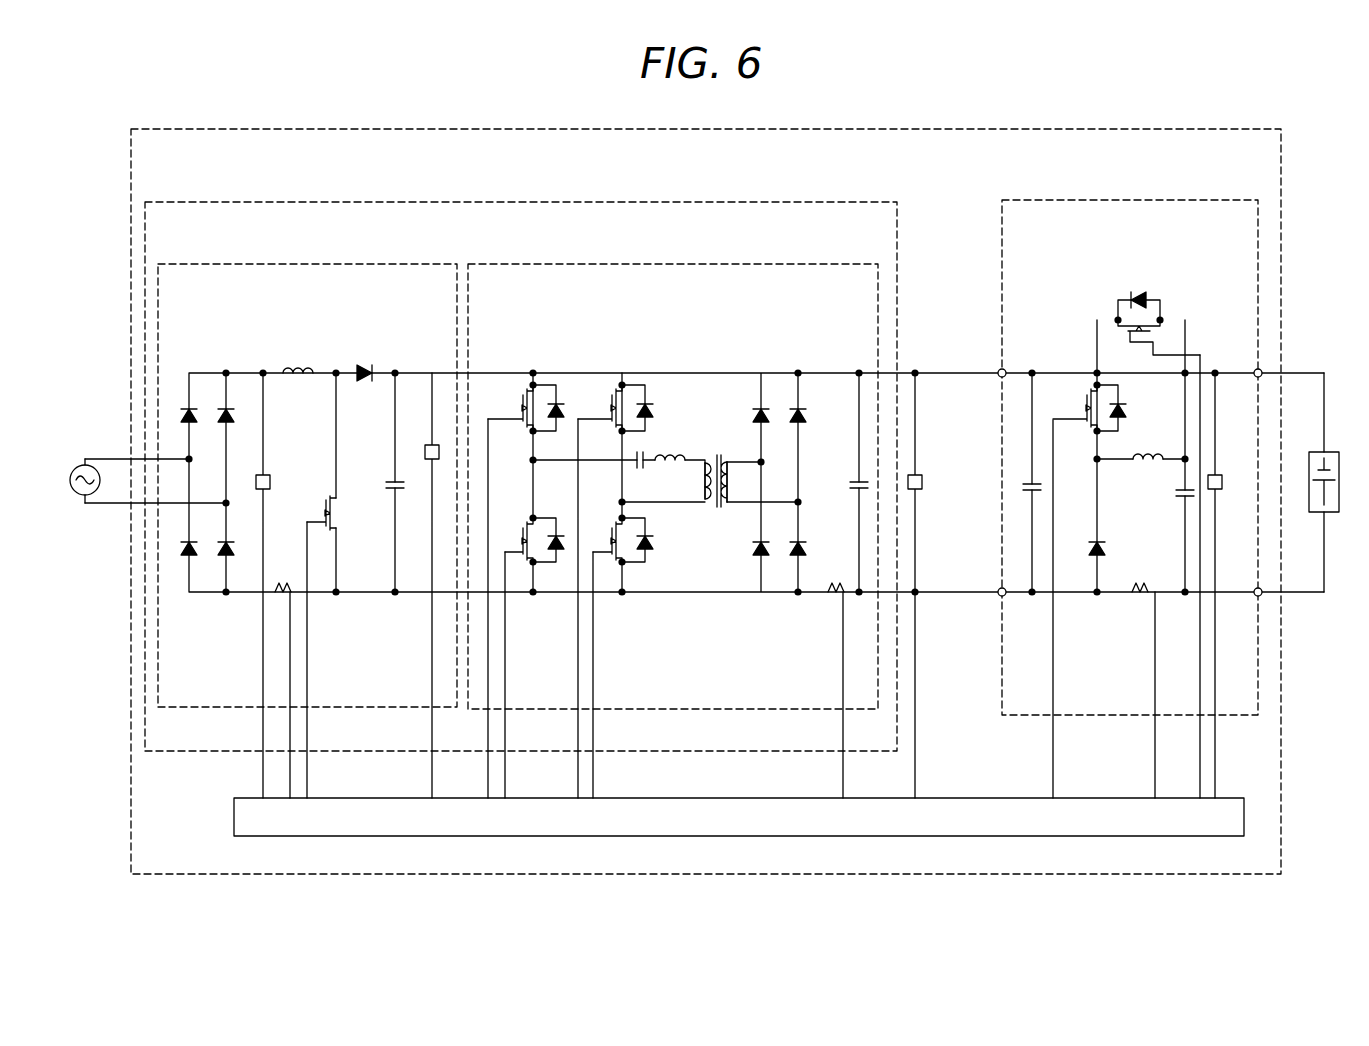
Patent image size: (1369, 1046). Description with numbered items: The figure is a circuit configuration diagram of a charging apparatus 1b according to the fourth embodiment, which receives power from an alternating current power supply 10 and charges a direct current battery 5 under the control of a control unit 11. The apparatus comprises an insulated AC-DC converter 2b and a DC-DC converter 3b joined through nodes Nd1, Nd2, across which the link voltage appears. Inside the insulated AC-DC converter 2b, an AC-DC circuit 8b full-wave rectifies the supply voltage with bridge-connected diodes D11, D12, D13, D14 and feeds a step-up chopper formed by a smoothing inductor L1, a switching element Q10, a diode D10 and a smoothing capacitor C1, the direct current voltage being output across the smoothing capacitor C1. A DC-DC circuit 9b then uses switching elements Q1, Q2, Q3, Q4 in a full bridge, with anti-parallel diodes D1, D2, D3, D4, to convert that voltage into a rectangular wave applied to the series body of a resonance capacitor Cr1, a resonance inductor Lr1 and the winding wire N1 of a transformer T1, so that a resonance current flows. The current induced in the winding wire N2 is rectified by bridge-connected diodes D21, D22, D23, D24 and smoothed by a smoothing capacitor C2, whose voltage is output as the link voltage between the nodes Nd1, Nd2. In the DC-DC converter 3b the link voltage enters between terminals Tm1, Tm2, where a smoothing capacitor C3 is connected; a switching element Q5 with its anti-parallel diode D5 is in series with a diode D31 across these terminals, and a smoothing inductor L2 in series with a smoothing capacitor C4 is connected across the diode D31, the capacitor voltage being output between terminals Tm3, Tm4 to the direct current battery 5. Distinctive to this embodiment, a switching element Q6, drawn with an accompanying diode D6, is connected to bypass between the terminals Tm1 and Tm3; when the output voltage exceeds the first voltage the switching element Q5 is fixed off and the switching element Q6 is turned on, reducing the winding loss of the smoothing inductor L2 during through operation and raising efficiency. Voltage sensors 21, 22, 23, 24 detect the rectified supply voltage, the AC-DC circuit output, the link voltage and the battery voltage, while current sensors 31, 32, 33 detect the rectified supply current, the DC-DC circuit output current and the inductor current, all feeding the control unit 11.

The charging apparatus 1b is at (192, 128).
The insulated AC-DC converter 2b is at (232, 202).
The DC-DC converter 3b is at (1075, 198).
The AC-DC circuit 8b is at (247, 264).
The DC-DC circuit 9b is at (553, 264).
The alternating current power supply 10 is at (82, 460).
The control unit 11 is at (234, 810).
The direct current battery 5 is at (1326, 452).
The voltage sensor 21 is at (268, 476).
The voltage sensor 22 is at (430, 458).
The voltage sensor 23 is at (922, 476).
The voltage sensor 24 is at (1218, 480).
The current sensor 31 is at (287, 596).
The current sensor 32 is at (836, 584).
The current sensor 33 is at (1140, 600).
The diode D11 is at (183, 396).
The diode D12 is at (188, 559).
The diode D13 is at (222, 410).
The diode D14 is at (224, 562).
The smoothing inductor L1 is at (292, 368).
The diode D10 is at (360, 368).
The smoothing capacitor C1 is at (398, 464).
The switching element Q10 is at (338, 524).
The switching element Q1 is at (510, 384).
The switching element Q2 is at (516, 566).
The switching element Q3 is at (610, 384).
The switching element Q4 is at (614, 566).
The diode D1 is at (558, 390).
The diode D2 is at (556, 570).
The diode D3 is at (654, 390).
The diode D4 is at (642, 568).
The resonance capacitor Cr1 is at (642, 446).
The resonance inductor Lr1 is at (674, 456).
The transformer T1 is at (717, 456).
The winding wire N1 is at (708, 506).
The winding wire N2 is at (732, 508).
The diode D21 is at (754, 396).
The diode D22 is at (754, 568).
The diode D23 is at (794, 406).
The diode D24 is at (792, 566).
The smoothing capacitor C2 is at (852, 476).
The node Nd1 is at (918, 372).
The node Nd2 is at (916, 594).
The terminal Tm1 is at (1002, 370).
The terminal Tm2 is at (1002, 596).
The terminal Tm3 is at (1256, 366).
The terminal Tm4 is at (1258, 598).
The smoothing capacitor C3 is at (1030, 470).
The switching element Q5 is at (1076, 386).
The diode D5 is at (1120, 420).
The switching element Q6 is at (1132, 344).
The diode D6 is at (1136, 296).
The smoothing inductor L2 is at (1148, 462).
The smoothing capacitor C4 is at (1184, 502).
The diode D31 is at (1092, 568).